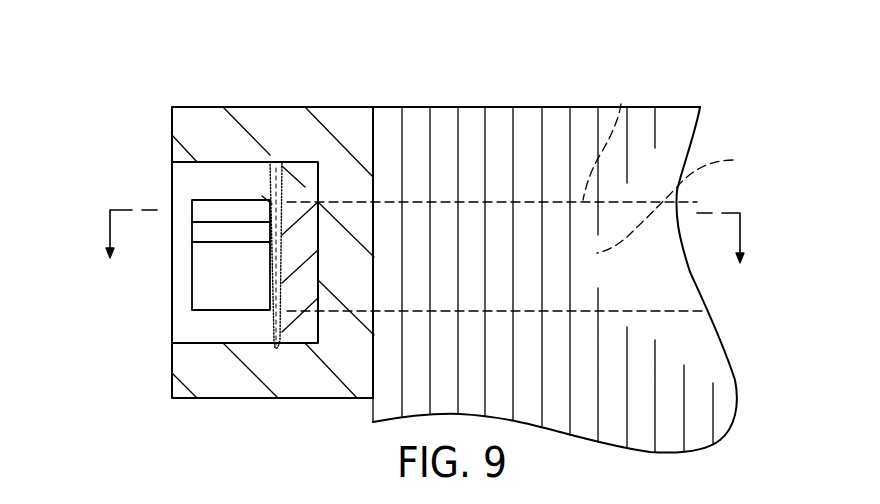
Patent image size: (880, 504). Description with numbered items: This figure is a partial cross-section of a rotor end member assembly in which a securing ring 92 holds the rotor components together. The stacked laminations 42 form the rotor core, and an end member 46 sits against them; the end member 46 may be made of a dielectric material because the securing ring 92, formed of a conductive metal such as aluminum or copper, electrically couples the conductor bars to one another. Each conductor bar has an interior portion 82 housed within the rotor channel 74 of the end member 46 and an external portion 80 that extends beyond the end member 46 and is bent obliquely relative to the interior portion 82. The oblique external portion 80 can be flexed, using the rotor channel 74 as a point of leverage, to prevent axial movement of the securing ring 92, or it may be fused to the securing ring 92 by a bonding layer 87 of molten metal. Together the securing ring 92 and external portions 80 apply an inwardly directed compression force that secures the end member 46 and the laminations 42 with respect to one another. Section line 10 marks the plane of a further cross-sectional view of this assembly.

The section line 10- 10 is at (425, 251).
The laminations 42 is at (530, 118).
The end member 46 is at (207, 118).
The rotor channel 74 is at (621, 104).
The external portion 80 is at (192, 278).
The interior portion 82 is at (680, 199).
The bonding layer 87 is at (270, 212).
The securing ring 92 is at (303, 183).